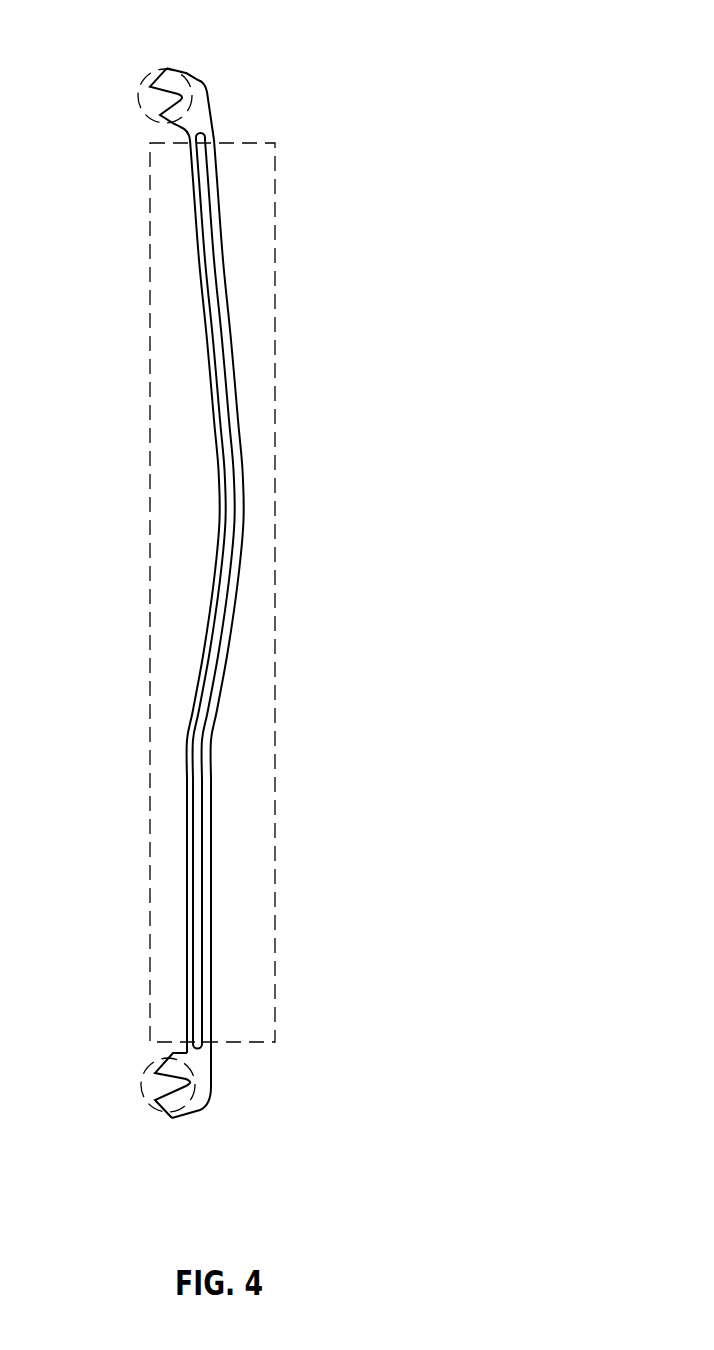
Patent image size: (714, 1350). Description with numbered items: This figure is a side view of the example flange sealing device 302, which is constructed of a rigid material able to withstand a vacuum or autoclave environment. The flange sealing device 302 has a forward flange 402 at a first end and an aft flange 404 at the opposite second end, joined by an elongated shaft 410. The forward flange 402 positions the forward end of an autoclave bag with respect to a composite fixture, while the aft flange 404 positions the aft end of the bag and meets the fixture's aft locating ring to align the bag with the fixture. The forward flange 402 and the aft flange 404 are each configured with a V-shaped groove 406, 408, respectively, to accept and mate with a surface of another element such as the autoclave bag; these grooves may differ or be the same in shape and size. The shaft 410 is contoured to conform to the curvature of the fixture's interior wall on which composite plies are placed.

The flange sealing device 302 is at (122, 63).
The forward flange 402 is at (200, 1110).
The aft flange 404 is at (197, 78).
The V-shaped groove 406 is at (145, 1098).
The V-shaped groove 408 is at (138, 108).
The shaft 410 is at (274, 520).